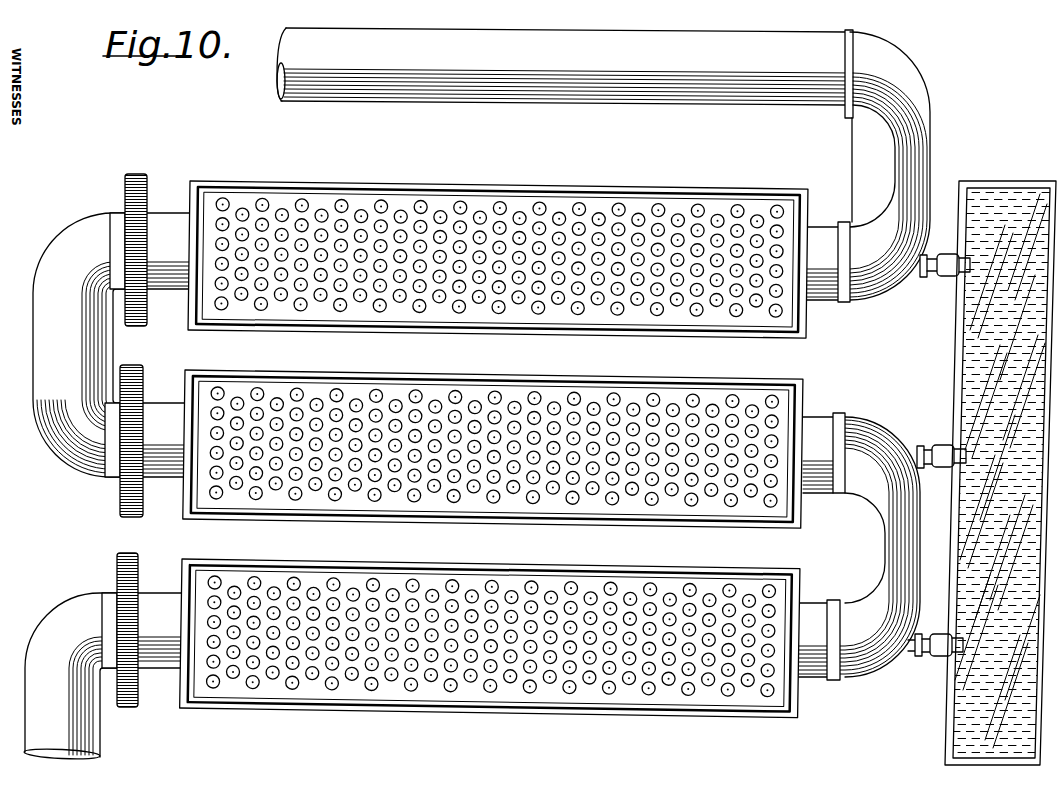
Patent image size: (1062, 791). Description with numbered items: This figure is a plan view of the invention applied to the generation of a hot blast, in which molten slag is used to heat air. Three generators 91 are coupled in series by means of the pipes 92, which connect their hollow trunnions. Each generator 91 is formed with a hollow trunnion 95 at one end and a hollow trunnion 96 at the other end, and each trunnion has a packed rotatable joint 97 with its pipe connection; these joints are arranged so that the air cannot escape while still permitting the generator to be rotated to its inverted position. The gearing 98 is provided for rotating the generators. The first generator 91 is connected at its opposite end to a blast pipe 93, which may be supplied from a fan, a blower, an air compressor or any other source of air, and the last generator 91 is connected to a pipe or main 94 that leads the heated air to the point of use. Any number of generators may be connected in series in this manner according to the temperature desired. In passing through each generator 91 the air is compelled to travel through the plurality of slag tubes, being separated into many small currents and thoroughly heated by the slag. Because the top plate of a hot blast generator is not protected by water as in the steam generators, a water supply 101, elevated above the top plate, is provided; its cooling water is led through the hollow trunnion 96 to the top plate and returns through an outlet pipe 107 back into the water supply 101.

The generator 91 is at (494, 437).
The pipe 92 is at (33, 320).
The blast pipe 93 is at (565, 73).
The pipe or main 94 is at (103, 676).
The hollow trunnion 95 is at (177, 278).
The hollow trunnion 96 is at (825, 237).
The packed rotatable joint 97 is at (847, 302).
The gearing 98 is at (133, 365).
The water supply 101 is at (1002, 188).
The outlet pipe 107 is at (933, 280).